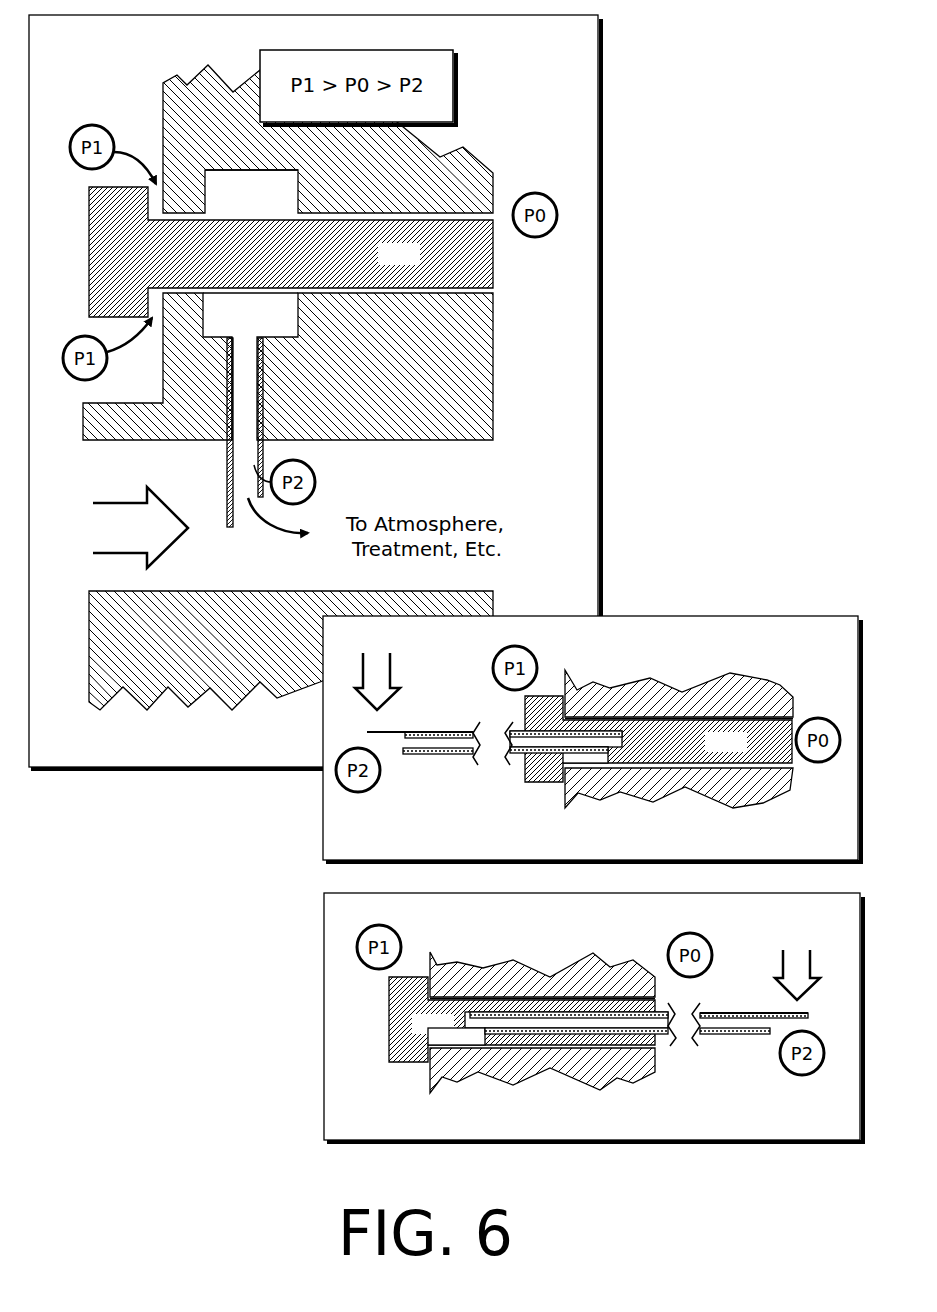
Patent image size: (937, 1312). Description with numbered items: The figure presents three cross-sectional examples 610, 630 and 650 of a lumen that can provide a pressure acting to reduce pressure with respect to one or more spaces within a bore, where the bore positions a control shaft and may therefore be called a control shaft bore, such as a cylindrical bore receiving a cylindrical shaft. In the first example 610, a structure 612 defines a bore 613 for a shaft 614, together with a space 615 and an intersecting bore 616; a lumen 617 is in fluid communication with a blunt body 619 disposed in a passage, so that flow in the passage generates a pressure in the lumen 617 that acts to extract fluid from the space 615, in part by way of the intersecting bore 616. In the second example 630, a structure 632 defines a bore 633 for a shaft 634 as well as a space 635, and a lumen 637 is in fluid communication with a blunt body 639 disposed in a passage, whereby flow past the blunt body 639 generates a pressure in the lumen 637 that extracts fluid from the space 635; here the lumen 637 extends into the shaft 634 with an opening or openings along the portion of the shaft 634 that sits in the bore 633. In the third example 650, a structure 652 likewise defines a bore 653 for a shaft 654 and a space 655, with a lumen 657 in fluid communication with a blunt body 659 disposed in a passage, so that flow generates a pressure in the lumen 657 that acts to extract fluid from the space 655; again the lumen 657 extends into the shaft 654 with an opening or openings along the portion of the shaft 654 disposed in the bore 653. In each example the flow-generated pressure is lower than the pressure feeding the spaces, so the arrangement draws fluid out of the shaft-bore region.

The example assembly 610 is at (315, 392).
The structure 612 is at (288, 252).
The bore 613 is at (296, 210).
The shaft 614 is at (291, 252).
The space 615 is at (250, 303).
The intersecting bore 616 is at (233, 362).
The lumen 617 is at (238, 445).
The blunt body 619 is at (228, 477).
The example assembly 630 is at (592, 739).
The structure 632 is at (705, 685).
The bore 633 is at (633, 713).
The shaft 634 is at (651, 739).
The space 635 is at (617, 763).
The lumen 637 is at (441, 742).
The blunt body 639 is at (458, 732).
The example assembly 650 is at (593, 1017).
The structure 652 is at (573, 962).
The bore 653 is at (495, 997).
The shaft 654 is at (528, 1019).
The space 655 is at (477, 1042).
The lumen 657 is at (757, 1022).
The blunt body 659 is at (772, 1012).